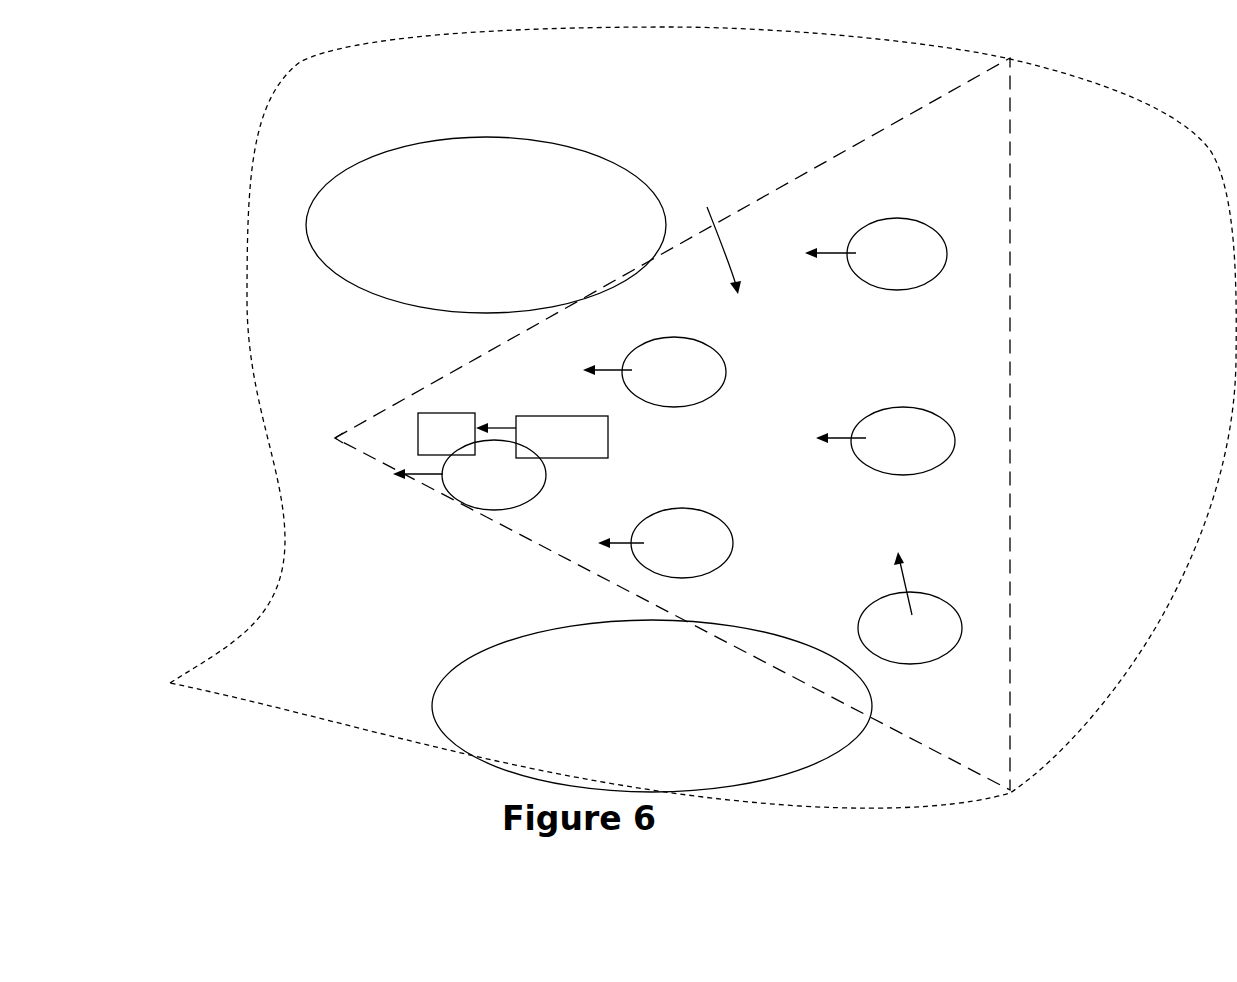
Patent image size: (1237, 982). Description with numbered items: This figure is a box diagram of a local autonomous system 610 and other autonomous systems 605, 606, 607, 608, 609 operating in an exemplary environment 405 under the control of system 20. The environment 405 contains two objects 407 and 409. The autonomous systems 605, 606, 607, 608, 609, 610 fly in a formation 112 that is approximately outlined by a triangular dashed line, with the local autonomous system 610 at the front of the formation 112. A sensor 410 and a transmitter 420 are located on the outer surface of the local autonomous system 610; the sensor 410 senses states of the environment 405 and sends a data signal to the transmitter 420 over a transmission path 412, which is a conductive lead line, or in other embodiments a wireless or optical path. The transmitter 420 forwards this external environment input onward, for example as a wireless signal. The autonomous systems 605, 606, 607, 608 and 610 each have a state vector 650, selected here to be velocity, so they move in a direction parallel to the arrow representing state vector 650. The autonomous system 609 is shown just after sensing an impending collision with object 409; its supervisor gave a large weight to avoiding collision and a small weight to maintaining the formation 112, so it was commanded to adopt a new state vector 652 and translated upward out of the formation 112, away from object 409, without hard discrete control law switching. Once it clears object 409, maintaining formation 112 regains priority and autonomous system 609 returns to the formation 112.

The system 20 is at (715, 233).
The formation 112 is at (868, 137).
The environment 405 is at (1077, 704).
The object 407 is at (407, 267).
The object 409 is at (530, 658).
The sensor 410 is at (608, 437).
The transmission path 412 is at (492, 427).
The transmitter 420 is at (436, 432).
The autonomous system 605 is at (693, 392).
The autonomous system 606 is at (693, 545).
The autonomous system 607 is at (908, 242).
The autonomous system 608 is at (918, 428).
The autonomous system 609 is at (912, 642).
The local autonomous system 610 is at (503, 472).
The state vector 650 is at (427, 478).
The state vector 652 is at (907, 580).